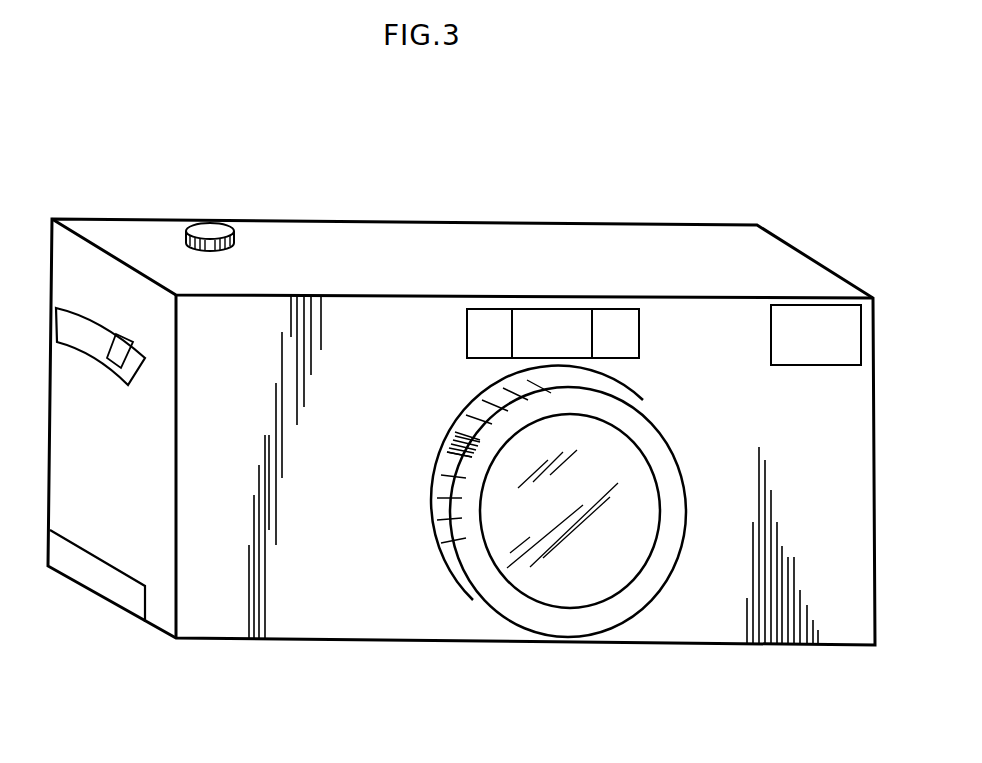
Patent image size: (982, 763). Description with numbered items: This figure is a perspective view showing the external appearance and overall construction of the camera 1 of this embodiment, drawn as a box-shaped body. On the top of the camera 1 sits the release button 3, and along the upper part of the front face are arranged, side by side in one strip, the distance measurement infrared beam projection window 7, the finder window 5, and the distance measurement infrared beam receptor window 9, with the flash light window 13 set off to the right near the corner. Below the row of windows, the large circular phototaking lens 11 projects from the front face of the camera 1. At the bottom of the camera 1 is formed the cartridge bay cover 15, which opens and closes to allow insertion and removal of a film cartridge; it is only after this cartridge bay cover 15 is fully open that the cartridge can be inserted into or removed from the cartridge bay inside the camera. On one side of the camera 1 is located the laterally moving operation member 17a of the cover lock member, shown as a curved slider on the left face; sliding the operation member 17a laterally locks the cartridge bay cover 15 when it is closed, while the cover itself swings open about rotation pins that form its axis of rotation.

The camera 1 is at (833, 607).
The release button 3 is at (213, 228).
The finder window 5 is at (560, 330).
The distance measurement infrared beam projection window 7 is at (490, 327).
The distance measurement infrared beam receptor window 9 is at (618, 332).
The phototaking lens 11 is at (647, 585).
The flash light window 13 is at (818, 325).
The cartridge bay cover 15 is at (122, 598).
The operation member 17a is at (118, 345).